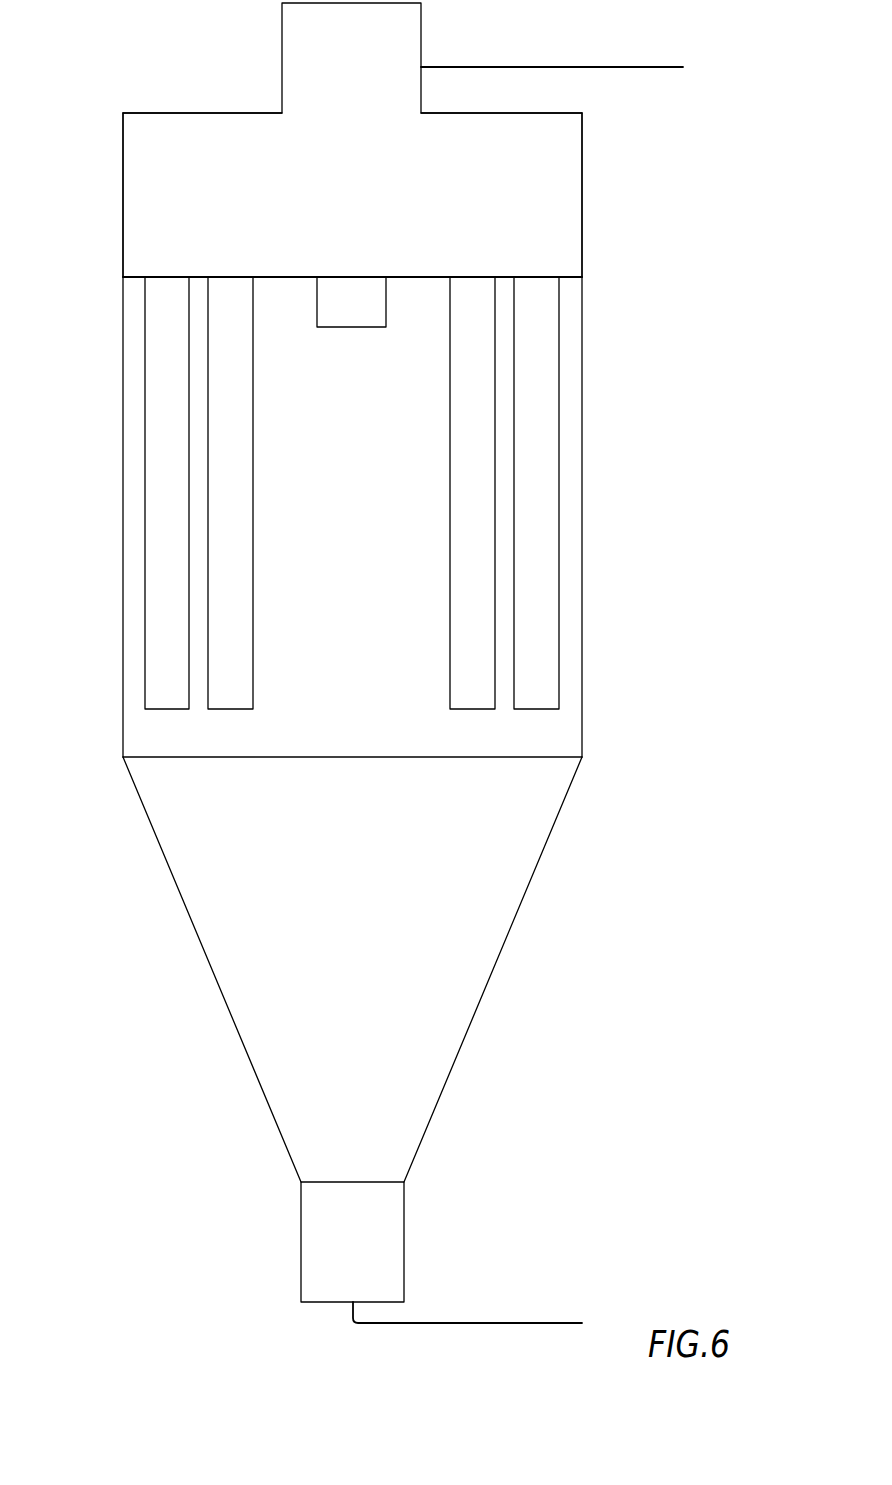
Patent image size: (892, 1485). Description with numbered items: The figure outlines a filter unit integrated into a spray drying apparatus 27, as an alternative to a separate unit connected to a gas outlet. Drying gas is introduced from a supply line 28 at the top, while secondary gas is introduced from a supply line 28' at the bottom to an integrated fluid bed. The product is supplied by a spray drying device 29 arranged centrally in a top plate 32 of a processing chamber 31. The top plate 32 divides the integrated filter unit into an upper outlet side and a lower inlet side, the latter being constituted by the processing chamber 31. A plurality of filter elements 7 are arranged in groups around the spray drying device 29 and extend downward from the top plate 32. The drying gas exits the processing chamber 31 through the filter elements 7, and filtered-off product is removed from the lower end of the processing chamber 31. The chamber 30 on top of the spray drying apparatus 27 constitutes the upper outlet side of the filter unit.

The filter elements 7 is at (242, 653).
The spray drying apparatus 27 is at (127, 793).
The supply line 28 is at (552, 94).
The supply line 28' is at (467, 1300).
The spray drying device 29 is at (350, 308).
The chamber 30 is at (557, 183).
The processing chamber 31 is at (330, 738).
The top plate 32 is at (272, 277).